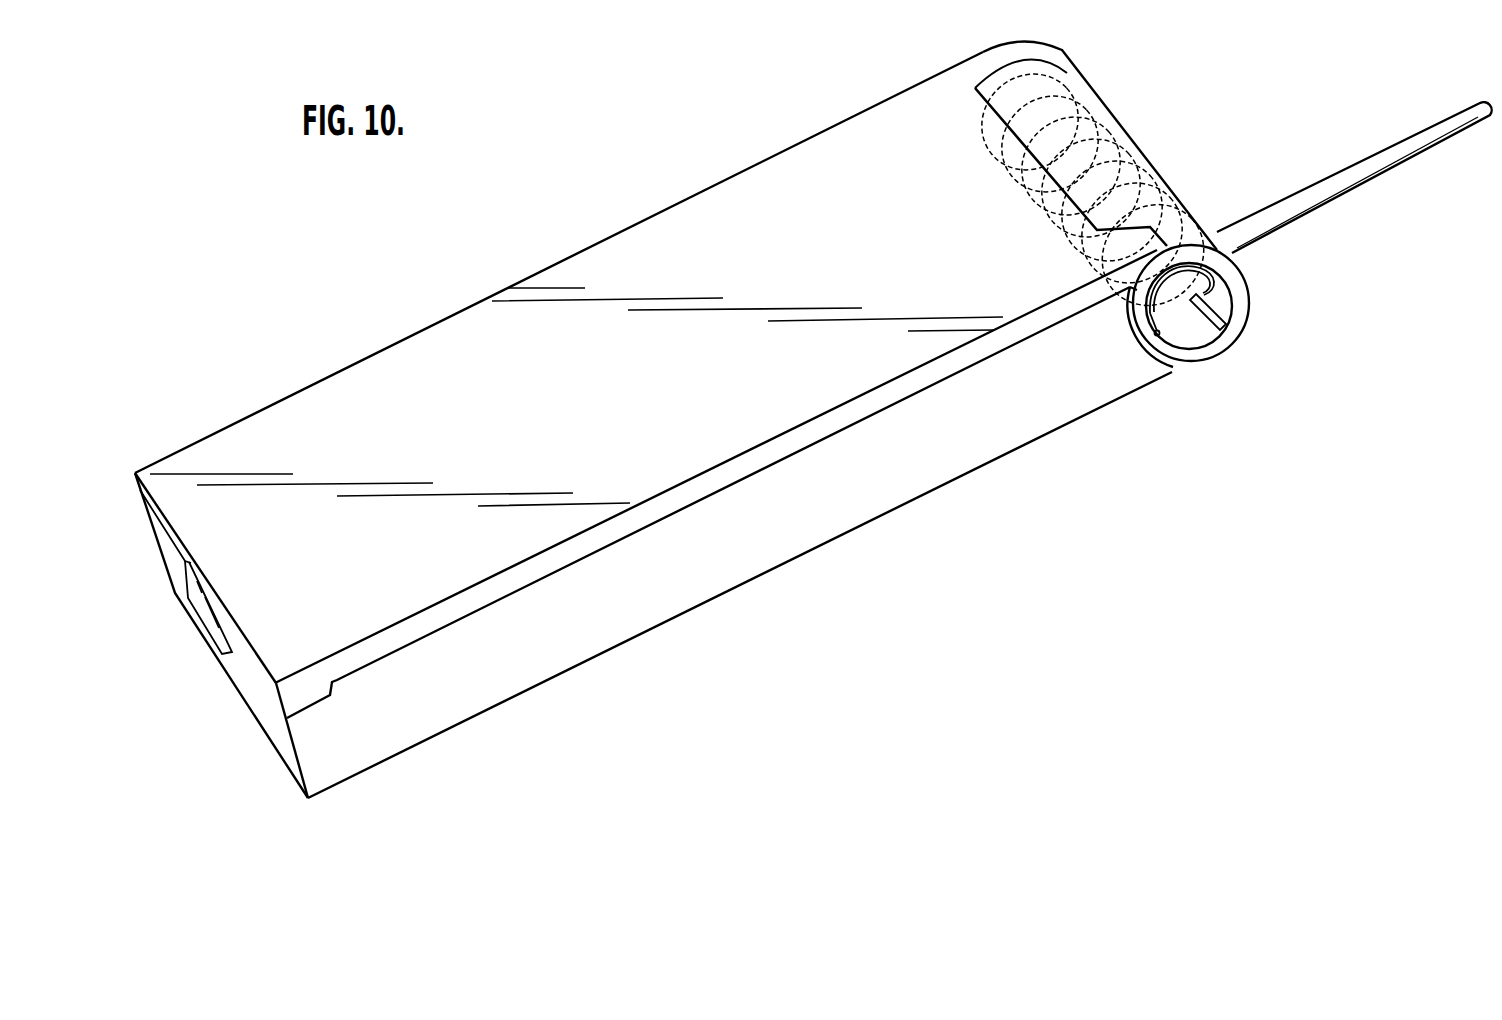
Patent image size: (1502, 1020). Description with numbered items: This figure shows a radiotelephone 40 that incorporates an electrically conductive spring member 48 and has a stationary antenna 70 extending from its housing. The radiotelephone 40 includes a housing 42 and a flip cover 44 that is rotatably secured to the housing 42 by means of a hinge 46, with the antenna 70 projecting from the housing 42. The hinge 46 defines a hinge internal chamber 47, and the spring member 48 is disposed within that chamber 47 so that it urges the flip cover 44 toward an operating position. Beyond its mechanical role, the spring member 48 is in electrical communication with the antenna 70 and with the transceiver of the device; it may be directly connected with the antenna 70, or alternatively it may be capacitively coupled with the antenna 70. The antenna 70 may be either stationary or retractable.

The radiotelephone 40 is at (791, 116).
The housing 42 is at (1028, 437).
The flip cover 44 is at (450, 363).
The hinge 46 is at (1047, 54).
The hinge internal chamber 47 is at (1192, 318).
The spring member 48 is at (1230, 274).
The antenna 70 is at (1407, 140).